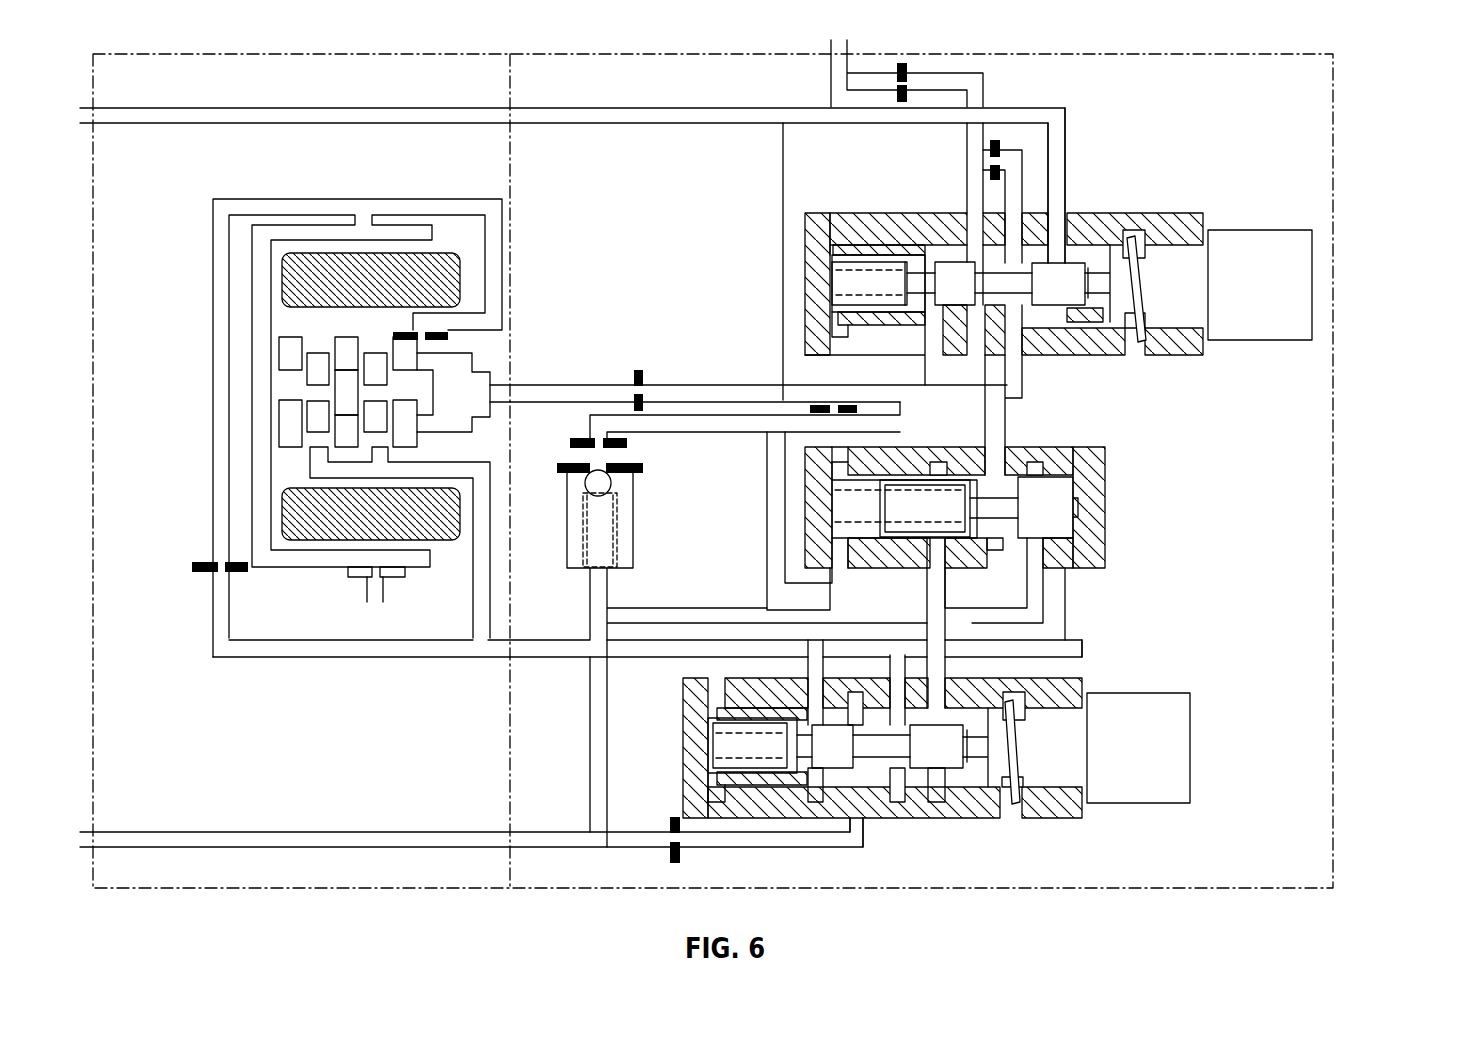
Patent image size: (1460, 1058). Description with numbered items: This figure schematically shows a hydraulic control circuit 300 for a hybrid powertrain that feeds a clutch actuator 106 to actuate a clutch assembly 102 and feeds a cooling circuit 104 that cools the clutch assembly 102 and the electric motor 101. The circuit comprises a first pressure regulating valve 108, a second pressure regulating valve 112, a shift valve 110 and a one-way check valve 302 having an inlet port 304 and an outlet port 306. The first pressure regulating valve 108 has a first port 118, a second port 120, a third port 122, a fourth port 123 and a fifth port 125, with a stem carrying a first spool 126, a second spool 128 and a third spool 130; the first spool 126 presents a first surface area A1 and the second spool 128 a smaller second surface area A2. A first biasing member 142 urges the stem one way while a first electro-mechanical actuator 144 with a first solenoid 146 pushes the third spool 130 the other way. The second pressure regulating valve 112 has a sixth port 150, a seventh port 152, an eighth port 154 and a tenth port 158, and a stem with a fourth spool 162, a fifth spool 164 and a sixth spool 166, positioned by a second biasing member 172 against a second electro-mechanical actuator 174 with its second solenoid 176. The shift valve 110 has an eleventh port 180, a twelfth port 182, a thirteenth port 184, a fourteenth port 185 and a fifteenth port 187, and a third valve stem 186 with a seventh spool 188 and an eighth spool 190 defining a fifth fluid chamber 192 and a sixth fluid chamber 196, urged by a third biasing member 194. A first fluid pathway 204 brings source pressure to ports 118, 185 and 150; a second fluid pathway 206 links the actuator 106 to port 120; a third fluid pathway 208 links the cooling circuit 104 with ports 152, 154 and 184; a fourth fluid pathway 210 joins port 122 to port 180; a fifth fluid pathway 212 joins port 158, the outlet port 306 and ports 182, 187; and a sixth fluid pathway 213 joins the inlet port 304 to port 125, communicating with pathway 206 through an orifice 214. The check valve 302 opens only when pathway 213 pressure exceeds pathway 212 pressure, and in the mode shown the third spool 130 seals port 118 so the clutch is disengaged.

The hydraulic control circuit 300 is at (1352, 90).
The first pressure regulating valve 108 is at (1360, 164).
The cooling circuit 104 is at (206, 548).
The electric motor 101 is at (455, 240).
The clutch assembly 102 is at (287, 322).
The clutch actuator 106 is at (455, 385).
The first fluid pathway 204 is at (686, 122).
The second fluid pathway 206 is at (600, 385).
The third fluid pathway 208 is at (375, 652).
The fourth fluid pathway 210 is at (935, 392).
The fifth fluid pathway 212 is at (600, 737).
The sixth fluid pathway 213 is at (655, 418).
The orifice 214 is at (815, 403).
The one-way check valve 302 is at (598, 538).
The inlet port 304 is at (595, 475).
The outlet port 306 is at (600, 598).
The second port 120 is at (1012, 365).
The third port 122 is at (1060, 293).
The fourth port 123 is at (1012, 202).
The fifth port 125 is at (935, 355).
The first spool 126 is at (840, 300).
The second spool 128 is at (955, 285).
The third spool 130 is at (1142, 340).
The first biasing member 142 is at (840, 278).
The first electro-mechanical actuator 144 is at (1165, 340).
The first solenoid 146 is at (1240, 300).
The first surface area A1 is at (935, 250).
The second surface area A2 is at (835, 262).
The first port 118 is at (1057, 232).
The shift valve 110 is at (1217, 485).
The eleventh port 180 is at (988, 458).
The twelfth port 182 is at (1083, 578).
The thirteenth port 184 is at (1072, 608).
The fourteenth port 185 is at (940, 560).
The third valve stem 186 is at (1010, 520).
The fifteenth port 187 is at (830, 545).
The seventh spool 188 is at (938, 500).
The eighth spool 190 is at (1045, 500).
The fifth fluid chamber 192 is at (1060, 495).
The third biasing member 194 is at (845, 505).
The sixth fluid chamber 196 is at (830, 510).
The second pressure regulating valve 112 is at (1217, 710).
The sixth port 150 is at (940, 707).
The seventh port 152 is at (897, 662).
The eighth port 154 is at (815, 662).
The tenth port 158 is at (858, 805).
The fourth spool 162 is at (745, 745).
The fifth spool 164 is at (833, 745).
The sixth spool 166 is at (935, 745).
The second biasing member 172 is at (715, 748).
The second electro-mechanical actuator 174 is at (1044, 770).
The second solenoid 176 is at (1118, 770).